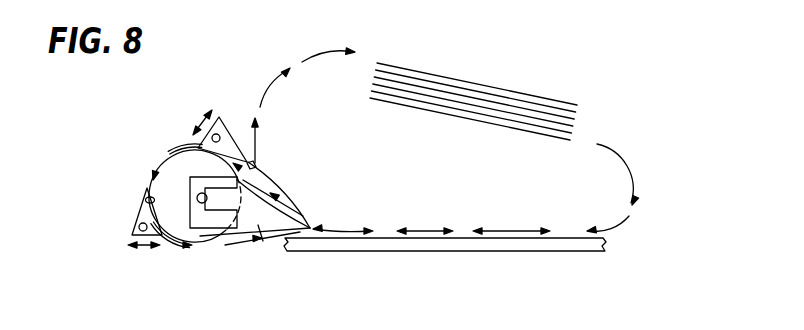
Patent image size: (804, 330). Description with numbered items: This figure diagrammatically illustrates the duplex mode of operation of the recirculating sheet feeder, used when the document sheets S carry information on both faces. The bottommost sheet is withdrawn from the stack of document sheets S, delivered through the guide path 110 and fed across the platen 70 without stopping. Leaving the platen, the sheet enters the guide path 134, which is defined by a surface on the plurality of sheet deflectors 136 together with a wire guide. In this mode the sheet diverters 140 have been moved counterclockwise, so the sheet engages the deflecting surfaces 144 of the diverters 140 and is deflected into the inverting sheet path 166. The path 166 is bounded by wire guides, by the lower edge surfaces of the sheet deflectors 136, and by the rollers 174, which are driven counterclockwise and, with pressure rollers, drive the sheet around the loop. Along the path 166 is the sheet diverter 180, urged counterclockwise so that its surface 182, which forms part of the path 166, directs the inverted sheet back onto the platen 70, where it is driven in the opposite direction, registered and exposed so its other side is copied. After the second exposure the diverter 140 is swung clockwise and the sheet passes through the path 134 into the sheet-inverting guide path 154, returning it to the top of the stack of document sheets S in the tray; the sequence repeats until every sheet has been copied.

The platen 70 is at (397, 245).
The guide path 110 is at (638, 188).
The guide path 134 is at (285, 212).
The sheet deflectors 136 is at (262, 239).
The sheet diverters 140 is at (220, 118).
The sheet deflecting surface 144 is at (252, 163).
The sheet-inverting guide path 154 is at (268, 92).
The inverting sheet path 166 is at (152, 178).
The rollers 174 is at (200, 236).
The sheet diverter 180 is at (135, 233).
The surface 182 is at (145, 200).
The document sheets S is at (507, 111).